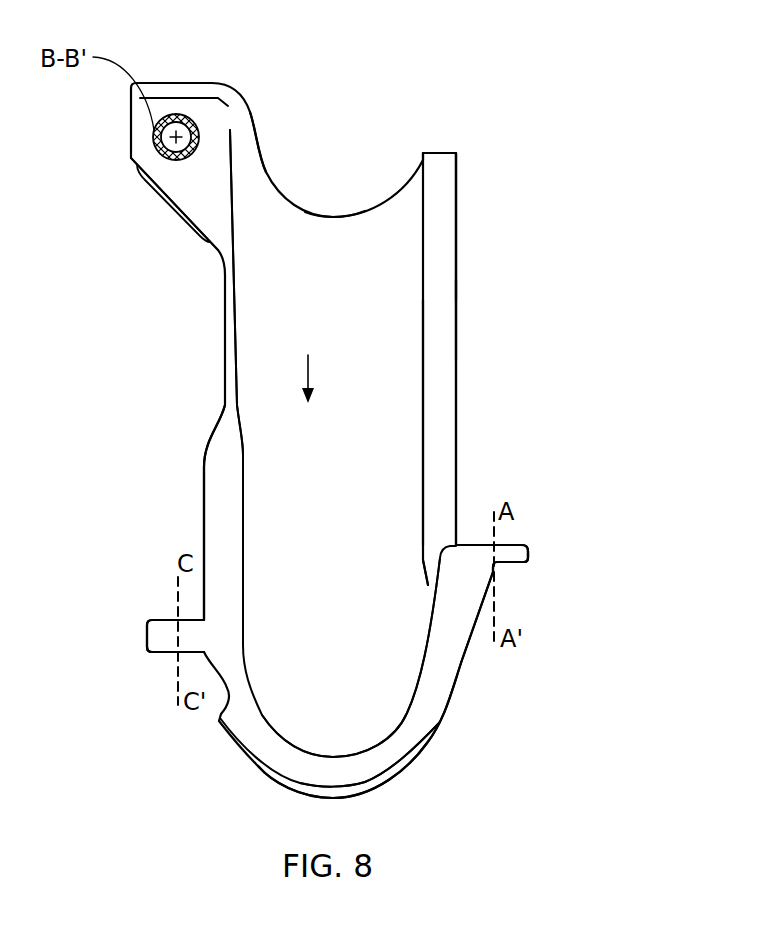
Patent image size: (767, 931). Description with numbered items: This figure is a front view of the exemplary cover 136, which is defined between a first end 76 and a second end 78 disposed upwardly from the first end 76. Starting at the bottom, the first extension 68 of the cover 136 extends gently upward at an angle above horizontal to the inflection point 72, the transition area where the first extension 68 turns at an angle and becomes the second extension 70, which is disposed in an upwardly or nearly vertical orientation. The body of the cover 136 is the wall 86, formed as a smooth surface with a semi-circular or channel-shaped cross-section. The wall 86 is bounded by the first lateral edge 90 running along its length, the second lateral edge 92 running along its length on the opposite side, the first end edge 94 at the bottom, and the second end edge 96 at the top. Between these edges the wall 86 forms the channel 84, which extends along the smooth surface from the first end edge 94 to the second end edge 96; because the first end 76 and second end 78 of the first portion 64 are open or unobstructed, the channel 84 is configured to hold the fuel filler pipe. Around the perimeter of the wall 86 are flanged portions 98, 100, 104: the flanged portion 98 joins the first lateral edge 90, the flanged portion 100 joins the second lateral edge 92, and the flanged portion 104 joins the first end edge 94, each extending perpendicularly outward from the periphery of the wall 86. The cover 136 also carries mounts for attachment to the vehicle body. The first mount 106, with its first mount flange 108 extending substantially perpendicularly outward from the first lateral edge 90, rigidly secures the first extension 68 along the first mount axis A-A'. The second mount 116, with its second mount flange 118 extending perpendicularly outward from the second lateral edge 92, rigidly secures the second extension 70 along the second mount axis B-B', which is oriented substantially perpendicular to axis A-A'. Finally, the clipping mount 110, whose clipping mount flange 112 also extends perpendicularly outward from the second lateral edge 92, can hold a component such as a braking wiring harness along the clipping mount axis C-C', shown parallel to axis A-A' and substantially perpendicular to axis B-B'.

The cover 136 is at (622, 109).
The second end 78 is at (268, 178).
The second end edge 96 is at (343, 215).
The first portion 64 is at (458, 200).
The second extension 70 is at (380, 243).
The flanged portion 98 is at (440, 305).
The first lateral edge 90 is at (423, 341).
The wall 86 is at (400, 402).
The channel 84 is at (314, 362).
The second lateral edge 92 is at (240, 410).
The flanged portion 100 is at (218, 480).
The clipping mount 110 is at (165, 620).
The clipping mount flange 112 is at (172, 638).
The second mount 116 is at (155, 142).
The second mount flange 118 is at (182, 189).
The first mount 106 is at (500, 543).
The first mount flange 108 is at (527, 550).
The inflection point 72 is at (380, 692).
The first extension 68 is at (317, 737).
The first end 76 is at (323, 798).
The first end edge 94 is at (373, 748).
The flanged portion 104 is at (420, 730).